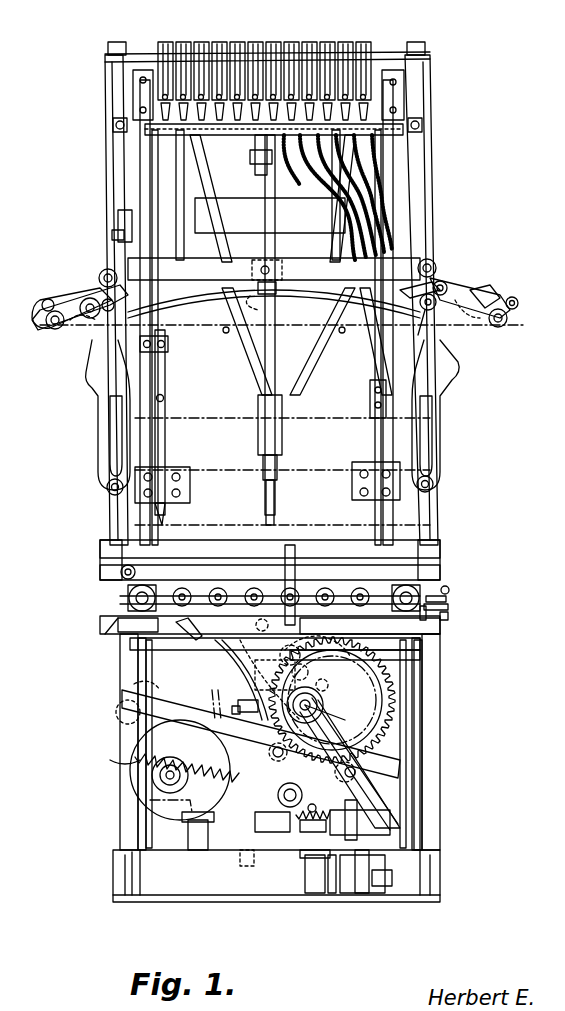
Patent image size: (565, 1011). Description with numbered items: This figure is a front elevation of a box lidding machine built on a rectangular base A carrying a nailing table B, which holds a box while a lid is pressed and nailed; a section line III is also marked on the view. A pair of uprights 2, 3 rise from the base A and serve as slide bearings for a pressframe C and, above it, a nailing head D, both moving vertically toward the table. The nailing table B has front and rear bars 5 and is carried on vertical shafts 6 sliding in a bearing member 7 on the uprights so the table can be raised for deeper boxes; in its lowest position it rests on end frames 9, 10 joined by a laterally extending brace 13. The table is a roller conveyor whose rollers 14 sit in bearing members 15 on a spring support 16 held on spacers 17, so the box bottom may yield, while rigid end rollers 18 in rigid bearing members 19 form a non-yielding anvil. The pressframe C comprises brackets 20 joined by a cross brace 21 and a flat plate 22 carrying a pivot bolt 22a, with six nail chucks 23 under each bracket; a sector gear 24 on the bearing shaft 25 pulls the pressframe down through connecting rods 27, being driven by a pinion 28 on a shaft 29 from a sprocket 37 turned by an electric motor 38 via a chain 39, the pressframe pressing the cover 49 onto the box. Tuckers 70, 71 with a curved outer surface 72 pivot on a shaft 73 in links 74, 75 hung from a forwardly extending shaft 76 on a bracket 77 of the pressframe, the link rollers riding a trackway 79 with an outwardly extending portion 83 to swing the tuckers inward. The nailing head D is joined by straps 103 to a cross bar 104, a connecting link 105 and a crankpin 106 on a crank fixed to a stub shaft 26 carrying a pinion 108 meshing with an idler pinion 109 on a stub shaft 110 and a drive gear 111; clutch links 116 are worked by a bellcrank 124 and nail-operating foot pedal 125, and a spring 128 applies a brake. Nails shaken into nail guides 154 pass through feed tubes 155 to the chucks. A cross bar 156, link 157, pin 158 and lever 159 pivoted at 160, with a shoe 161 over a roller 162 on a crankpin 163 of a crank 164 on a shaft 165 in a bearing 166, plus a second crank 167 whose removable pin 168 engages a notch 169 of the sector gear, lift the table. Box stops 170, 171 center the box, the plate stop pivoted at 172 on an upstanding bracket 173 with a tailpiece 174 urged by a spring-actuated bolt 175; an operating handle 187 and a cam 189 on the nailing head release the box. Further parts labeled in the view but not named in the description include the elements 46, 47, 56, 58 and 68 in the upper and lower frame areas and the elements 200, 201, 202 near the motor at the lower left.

The upright 2 is at (430, 96).
The upright 3 is at (108, 96).
The front and rear bars 5 is at (105, 634).
The vertically extending shafts 6 is at (120, 770).
The bearing member 7 is at (138, 740).
The end frame 9 is at (406, 792).
The end frame 10 is at (146, 796).
The laterally extending brace 13 is at (420, 654).
The rollers 14 is at (250, 590).
The bearing members 15 is at (216, 590).
The spring support 16 is at (176, 590).
The spacers 17 is at (372, 622).
The rollers 18 is at (124, 598).
The rigid bearing members 19 is at (424, 590).
The brackets 20 is at (222, 289).
The cross brace 21 is at (250, 268).
The flat plate 22 is at (232, 140).
The pivot pin or bolt 22a is at (262, 296).
The nail chucks 23 is at (215, 264).
The sector gear 24 is at (380, 710).
The bearing shaft 25 is at (324, 704).
The stub shaft 26 is at (236, 640).
The connecting rods 27 is at (280, 527).
The pinion 28 is at (310, 565).
The shaft 29 is at (298, 590).
The sprocket 37 is at (222, 666).
The electric motor 38 is at (150, 810).
The chain 39 is at (210, 696).
The lever 46 is at (318, 870).
The bracket 47 is at (302, 858).
The cover 49 is at (372, 335).
The shaft 56 is at (186, 806).
The cam 58 is at (170, 796).
The plate 68 is at (200, 210).
The tucker 70 is at (492, 296).
The tucker 71 is at (55, 300).
The curved outer surface 72 is at (475, 290).
The shaft 73 is at (498, 324).
The link 74 is at (470, 320).
The link 75 is at (95, 328).
The forwardly extending shaft 76 is at (430, 312).
The laterally extending bracket 77 is at (420, 290).
The trackway 79 is at (110, 440).
The outwardly extending portion 83 is at (92, 378).
The straps 103 is at (333, 246).
The cross bar 104 is at (360, 405).
The connecting link 105 is at (282, 441).
The crankpin 106 is at (258, 628).
The pinion 108 is at (198, 628).
The idler pinion 109 is at (305, 658).
The stub shaft 110 is at (310, 672).
The drive gear 111 is at (330, 686).
The links 116 is at (249, 712).
The bellcrank 124 is at (370, 836).
The nail-operating foot pedal 125 is at (364, 890).
The spring 128 is at (292, 824).
The nail guides 154 is at (336, 45).
The feed tubes 155 is at (318, 158).
The cross bar 156 is at (300, 644).
The link 157 is at (275, 700).
The pin 158 is at (272, 752).
The lever 159 is at (148, 722).
The pivot 160 is at (140, 712).
The shoe 161 is at (370, 800).
The roller 162 is at (303, 805).
The crankpin 163 is at (309, 821).
The crank 164 is at (297, 794).
The shaft 165 is at (340, 752).
The bearing 166 is at (336, 714).
The second crank 167 is at (422, 736).
The removable pin 168 is at (360, 762).
The notch 169 is at (360, 772).
The box stop 170 is at (121, 570).
The box stop 171 is at (449, 590).
The pivot 172 is at (446, 599).
The upstanding bracket 173 is at (452, 618).
The tailpiece 174 is at (448, 607).
The spring-actuated bolt 175 is at (427, 614).
The operating handle 187 is at (138, 625).
The cam 189 is at (168, 437).
The post 200 is at (215, 836).
The spring 201 is at (187, 765).
The link 202 is at (108, 758).
The base A is at (447, 877).
The nailing table B is at (94, 630).
The pressframe C is at (435, 262).
The nailing head D is at (118, 215).
The section line III is at (295, 512).